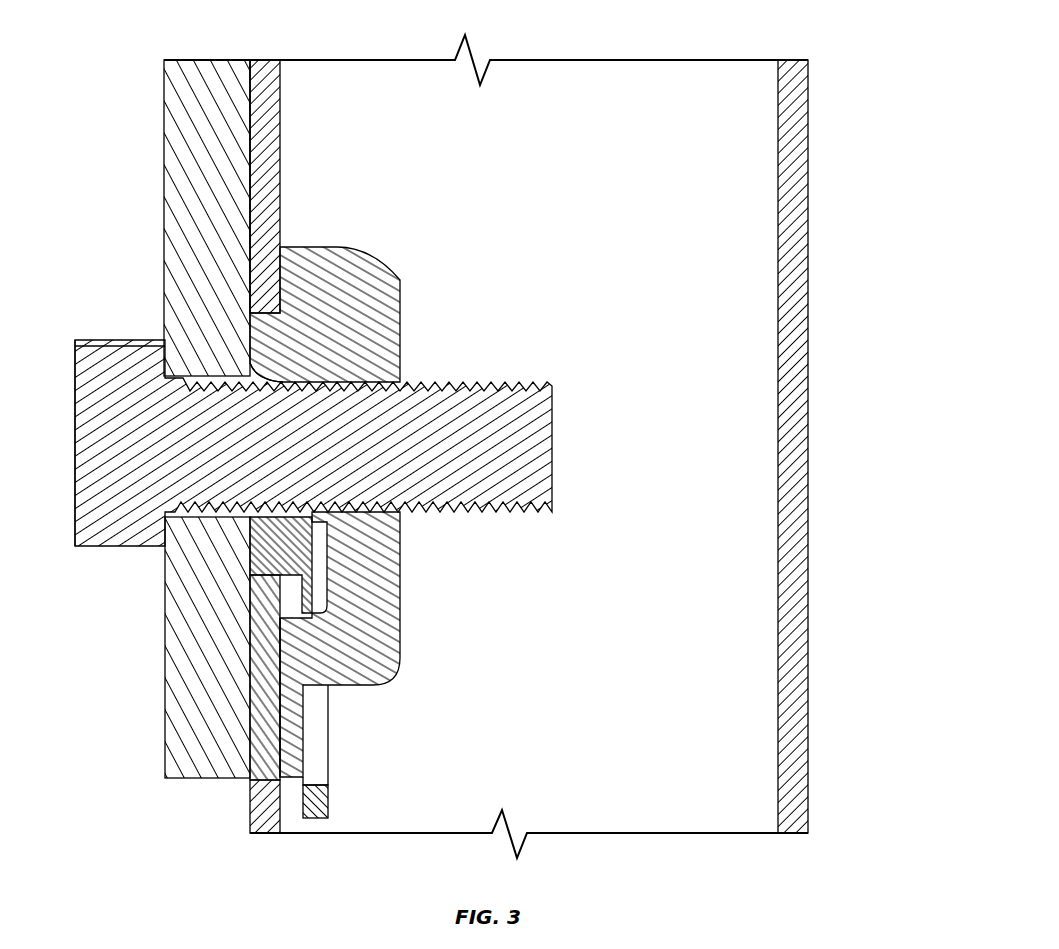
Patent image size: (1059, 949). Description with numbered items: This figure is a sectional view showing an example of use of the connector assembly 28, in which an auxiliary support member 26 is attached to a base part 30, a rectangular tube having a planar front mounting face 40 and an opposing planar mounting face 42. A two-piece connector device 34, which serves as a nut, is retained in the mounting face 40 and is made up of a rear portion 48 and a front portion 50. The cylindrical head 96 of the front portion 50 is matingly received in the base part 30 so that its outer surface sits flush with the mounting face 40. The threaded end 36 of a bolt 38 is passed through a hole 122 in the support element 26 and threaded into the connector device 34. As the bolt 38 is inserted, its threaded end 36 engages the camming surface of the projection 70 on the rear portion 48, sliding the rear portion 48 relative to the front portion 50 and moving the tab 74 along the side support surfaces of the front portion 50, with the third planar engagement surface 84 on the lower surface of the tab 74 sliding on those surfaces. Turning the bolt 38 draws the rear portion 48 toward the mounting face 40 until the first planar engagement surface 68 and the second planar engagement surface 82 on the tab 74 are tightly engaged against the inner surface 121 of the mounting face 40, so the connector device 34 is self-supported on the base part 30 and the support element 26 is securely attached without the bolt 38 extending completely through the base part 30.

The auxiliary support member 26 is at (176, 141).
The connector assembly 28 is at (619, 246).
The base part 30 is at (816, 64).
The connector device 34 is at (459, 317).
The threaded end 36 is at (522, 390).
The bolt 38 is at (85, 388).
The mounting face 40 is at (272, 99).
The mounting face 42 is at (800, 213).
The rear portion 48 is at (383, 606).
The front portion 50 is at (270, 557).
The first planar engagement surface 68 is at (282, 287).
The projection 70 is at (262, 333).
The tab 74 is at (292, 702).
The second planar engagement surface 82 is at (283, 760).
The third planar engagement surface 84 is at (305, 710).
The cylindrical head 96 is at (270, 577).
The inner surface 121 is at (250, 156).
The hole 122 is at (183, 515).